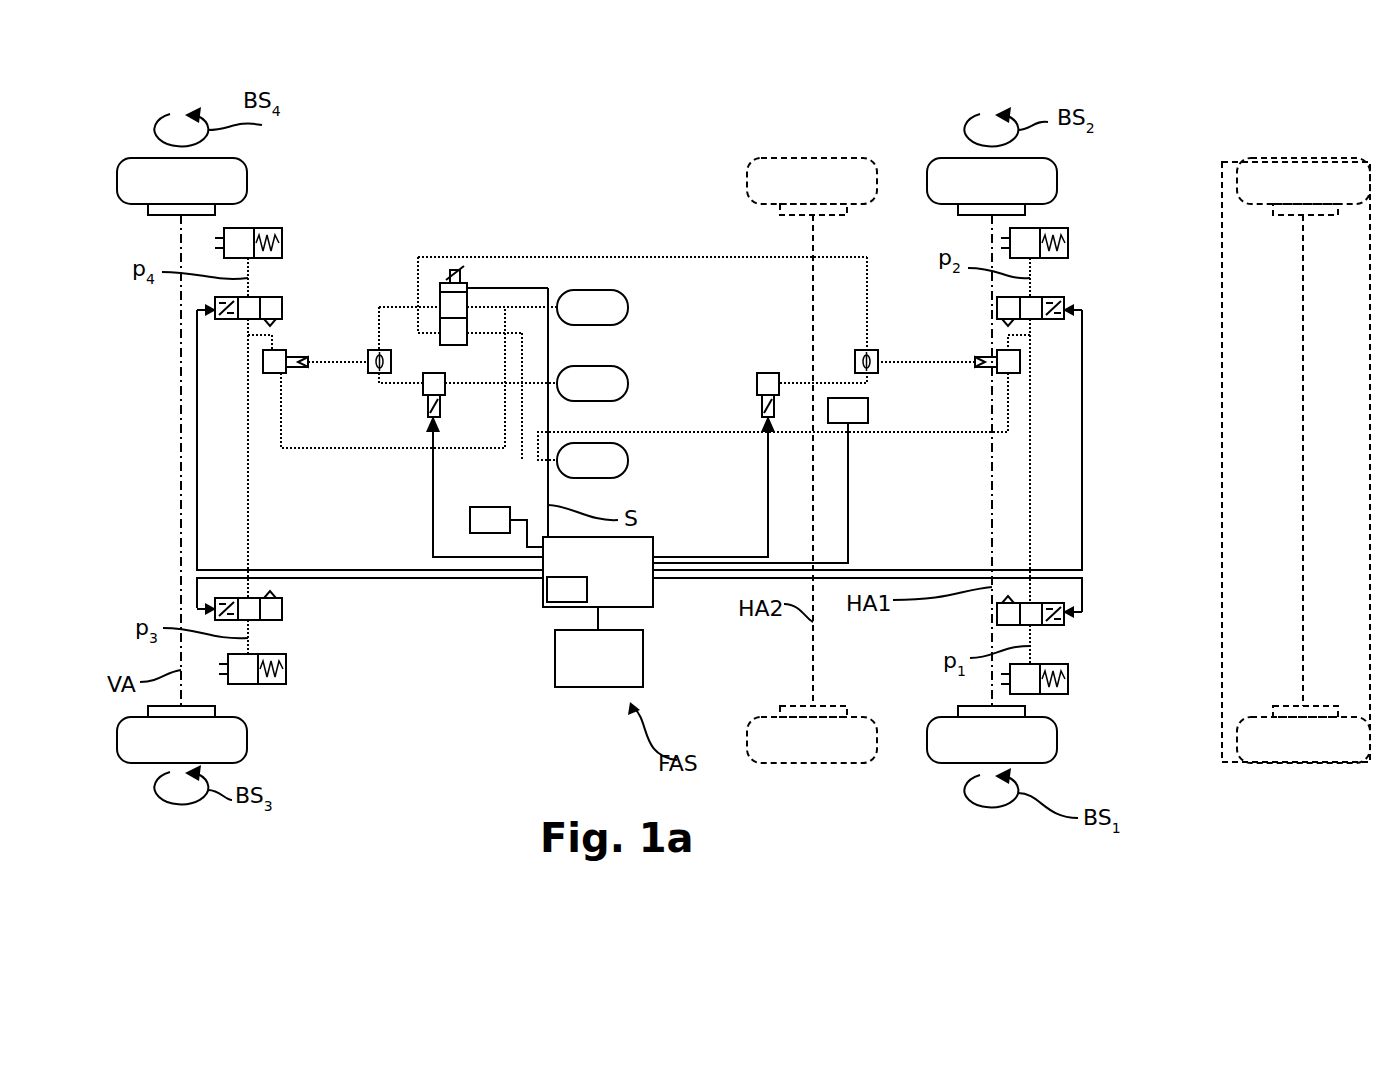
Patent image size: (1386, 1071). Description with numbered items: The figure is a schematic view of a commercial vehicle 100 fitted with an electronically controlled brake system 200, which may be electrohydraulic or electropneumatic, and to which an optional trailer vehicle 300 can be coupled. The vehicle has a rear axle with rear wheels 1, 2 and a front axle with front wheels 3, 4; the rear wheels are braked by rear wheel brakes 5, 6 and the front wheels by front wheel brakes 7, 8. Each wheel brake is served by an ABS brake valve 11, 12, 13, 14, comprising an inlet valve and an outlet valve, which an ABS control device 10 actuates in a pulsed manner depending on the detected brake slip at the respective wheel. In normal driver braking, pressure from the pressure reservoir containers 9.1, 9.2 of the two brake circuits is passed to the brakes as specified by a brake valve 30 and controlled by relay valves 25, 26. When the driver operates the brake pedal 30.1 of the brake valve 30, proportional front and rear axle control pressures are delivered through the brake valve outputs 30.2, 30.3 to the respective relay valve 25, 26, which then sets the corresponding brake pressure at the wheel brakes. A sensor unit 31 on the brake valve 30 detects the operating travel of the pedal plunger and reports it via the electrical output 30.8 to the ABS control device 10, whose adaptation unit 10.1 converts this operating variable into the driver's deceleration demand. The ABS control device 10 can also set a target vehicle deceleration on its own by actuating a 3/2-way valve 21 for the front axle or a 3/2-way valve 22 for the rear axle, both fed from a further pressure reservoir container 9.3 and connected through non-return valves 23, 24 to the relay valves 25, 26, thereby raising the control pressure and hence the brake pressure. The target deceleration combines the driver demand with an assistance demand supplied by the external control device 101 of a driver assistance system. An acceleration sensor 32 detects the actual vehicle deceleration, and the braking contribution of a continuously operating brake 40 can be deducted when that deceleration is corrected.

The rear wheel 1 is at (927, 740).
The rear wheel 2 is at (1057, 180).
The front wheel 3 is at (247, 740).
The front wheel 4 is at (247, 180).
The rear wheel brake 5 is at (1068, 679).
The rear wheel brake 6 is at (1068, 243).
The front wheel brake 7 is at (286, 669).
The front wheel brake 8 is at (282, 243).
The pressure reservoir container 9.1 is at (628, 307).
The pressure reservoir container 9.2 is at (628, 461).
The further pressure reservoir container 9.3 is at (628, 383).
The ABS control device 10 is at (584, 604).
The adaptation unit 10.1 is at (567, 602).
The ABS brake valve 11 is at (1055, 625).
The ABS brake valve 12 is at (1050, 320).
The ABS brake valve 13 is at (282, 609).
The ABS brake valve 14 is at (282, 307).
The 3/2-way valve 21 is at (423, 388).
The 3/2-way valve 22 is at (780, 390).
The non-return valve 23 is at (379, 373).
The non-return valve 24 is at (873, 375).
The relay valve 25 is at (263, 362).
The relay valve 26 is at (1020, 362).
The brake valve 30 is at (434, 302).
The brake pedal 30.1 is at (455, 270).
The brake valve output 30.2 is at (438, 307).
The brake valve output 30.3 is at (438, 337).
The electrical output 30.8 is at (467, 287).
The sensor unit 31 is at (438, 287).
The acceleration sensor 32 is at (470, 520).
The continuously operating brake 40 is at (868, 410).
The vehicle 100 is at (603, 198).
The external control device 101 is at (598, 687).
The electronically controlled brake system 200 is at (462, 720).
The trailer vehicle 300 is at (1208, 146).